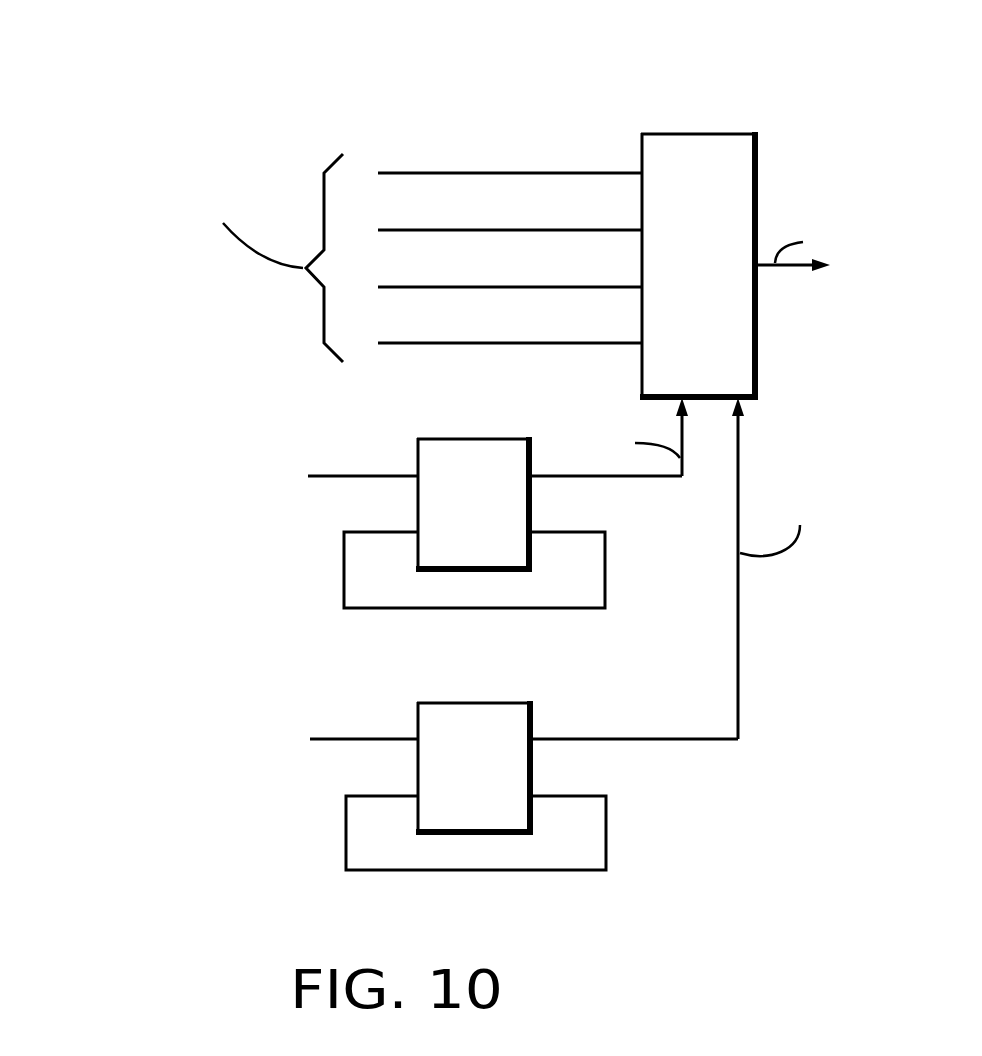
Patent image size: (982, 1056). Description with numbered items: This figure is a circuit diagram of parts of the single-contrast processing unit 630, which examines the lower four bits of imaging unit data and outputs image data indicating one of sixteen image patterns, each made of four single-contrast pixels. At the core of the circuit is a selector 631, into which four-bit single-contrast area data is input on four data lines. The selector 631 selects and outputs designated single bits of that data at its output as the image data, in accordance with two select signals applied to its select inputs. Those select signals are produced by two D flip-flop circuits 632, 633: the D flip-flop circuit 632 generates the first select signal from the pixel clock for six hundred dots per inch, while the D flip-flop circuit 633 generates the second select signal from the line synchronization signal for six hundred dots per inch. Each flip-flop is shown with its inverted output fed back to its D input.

The single-contrast processing unit 630 is at (245, 52).
The selector 631 is at (662, 133).
The D flip-flop circuit 632 is at (450, 438).
The D flip-flop circuit 633 is at (473, 702).